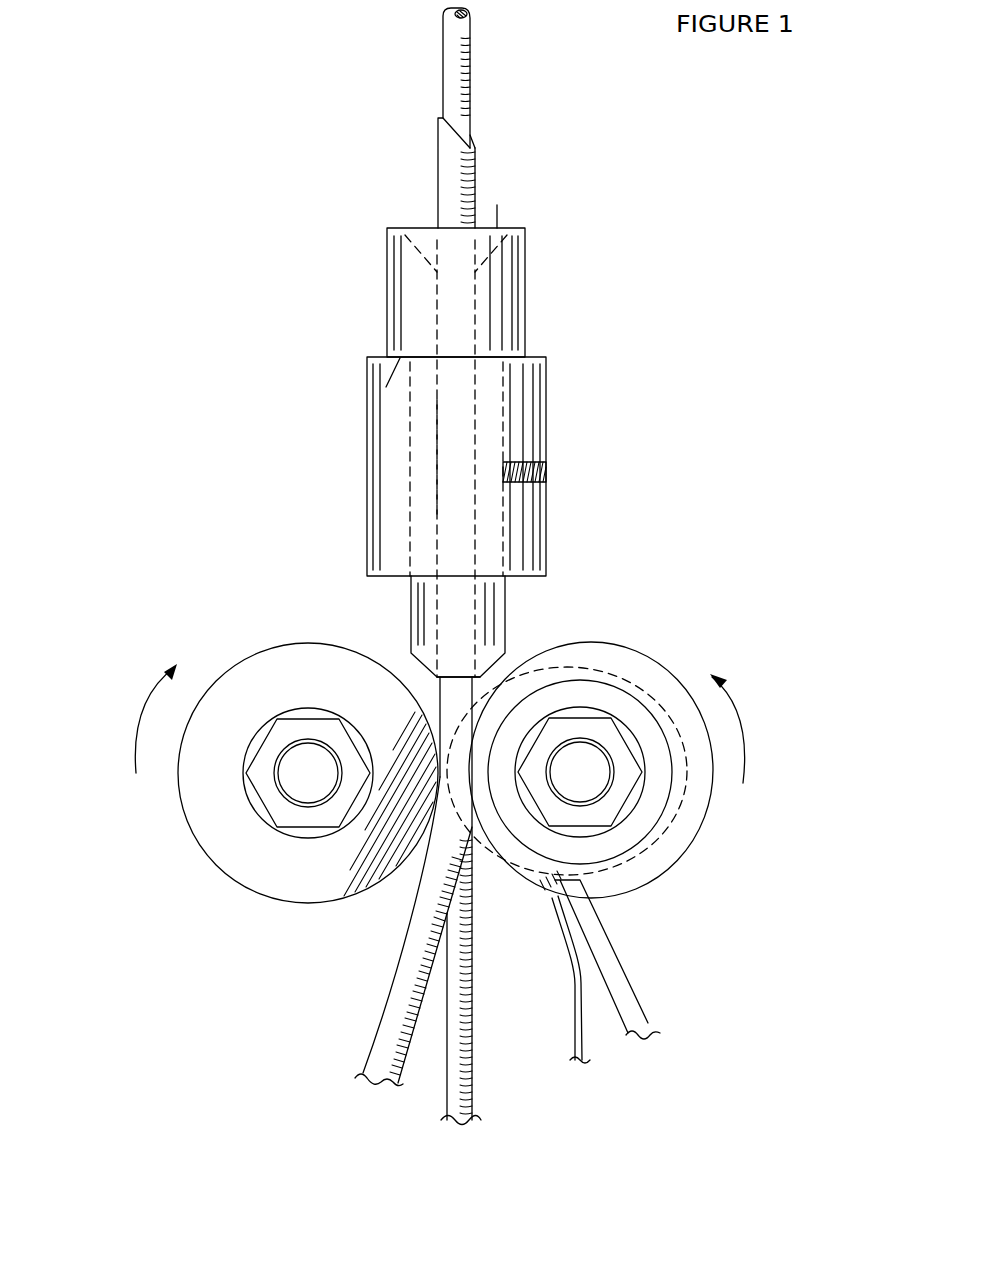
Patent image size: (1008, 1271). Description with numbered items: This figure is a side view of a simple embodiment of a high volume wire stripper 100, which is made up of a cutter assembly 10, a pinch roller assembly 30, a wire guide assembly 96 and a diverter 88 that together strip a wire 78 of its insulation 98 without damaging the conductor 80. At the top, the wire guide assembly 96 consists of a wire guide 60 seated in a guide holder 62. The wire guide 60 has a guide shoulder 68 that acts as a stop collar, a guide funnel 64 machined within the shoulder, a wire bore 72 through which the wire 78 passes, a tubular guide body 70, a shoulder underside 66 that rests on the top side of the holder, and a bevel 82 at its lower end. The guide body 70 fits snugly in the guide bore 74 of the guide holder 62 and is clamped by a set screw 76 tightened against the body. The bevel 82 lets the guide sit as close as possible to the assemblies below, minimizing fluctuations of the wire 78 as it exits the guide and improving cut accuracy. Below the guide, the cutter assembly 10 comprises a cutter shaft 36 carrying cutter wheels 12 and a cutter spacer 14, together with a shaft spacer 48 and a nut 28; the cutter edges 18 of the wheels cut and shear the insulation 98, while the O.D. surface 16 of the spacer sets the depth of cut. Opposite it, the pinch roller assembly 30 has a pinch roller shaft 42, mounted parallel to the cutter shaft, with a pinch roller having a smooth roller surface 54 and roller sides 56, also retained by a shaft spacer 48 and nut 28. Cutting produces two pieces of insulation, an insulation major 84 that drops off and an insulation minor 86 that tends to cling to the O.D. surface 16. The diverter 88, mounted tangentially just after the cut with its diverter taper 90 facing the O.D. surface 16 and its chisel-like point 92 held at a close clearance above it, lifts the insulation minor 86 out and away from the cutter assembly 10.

The cutter assembly 10 is at (666, 719).
The cutter wheels 12 is at (705, 680).
The cutter spacer 14 is at (668, 688).
The O.D. surface 16 is at (630, 688).
The cutter edges 18 is at (582, 672).
The nut 28 is at (296, 810).
The pinch roller assembly 30 is at (238, 736).
The cutter shaft 36 is at (595, 795).
The pinch roller shaft 42 is at (300, 790).
The shaft spacer 48 is at (305, 830).
The roller surface 54 is at (246, 650).
The roller sides 56 is at (237, 690).
The wire guide 60 is at (512, 283).
The guide holder 62 is at (538, 372).
The guide funnel 64 is at (497, 205).
The shoulder underside 66 is at (386, 387).
The guide shoulder 68 is at (392, 245).
The guide body 70 is at (493, 620).
The wire bore 72 is at (435, 505).
The guide bore 74 is at (505, 420).
The set screw 76 is at (546, 466).
The wire 78 is at (453, 178).
The conductor 80 is at (444, 38).
The bevel 82 is at (402, 690).
The insulation major 84 is at (412, 975).
The insulation minor 86 is at (575, 1044).
The diverter 88 is at (620, 990).
The diverter taper 90 is at (575, 897).
The point 92 is at (549, 869).
The wire guide assembly 96 is at (260, 417).
The insulation 98 is at (474, 148).
The high volume wire stripper 100 is at (800, 457).